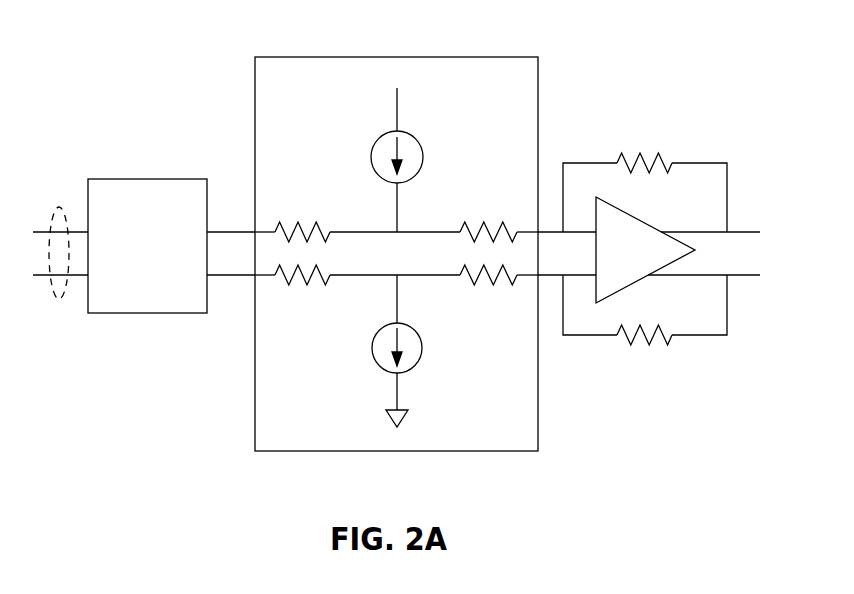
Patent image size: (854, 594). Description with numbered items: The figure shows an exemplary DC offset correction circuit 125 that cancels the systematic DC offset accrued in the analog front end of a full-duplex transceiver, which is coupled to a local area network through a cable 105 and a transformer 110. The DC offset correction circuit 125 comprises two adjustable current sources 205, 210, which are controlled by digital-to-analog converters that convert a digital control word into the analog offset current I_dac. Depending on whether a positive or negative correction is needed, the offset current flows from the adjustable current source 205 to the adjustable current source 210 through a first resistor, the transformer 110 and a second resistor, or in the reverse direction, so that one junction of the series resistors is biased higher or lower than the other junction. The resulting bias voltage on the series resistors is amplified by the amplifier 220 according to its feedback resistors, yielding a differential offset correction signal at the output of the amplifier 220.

The cable 105 is at (60, 207).
The transformer 110 is at (157, 179).
The DC offset correction circuit 125 is at (320, 57).
The adjustable current source 205 is at (371, 156).
The adjustable current source 210 is at (372, 348).
The amplifier 220 is at (695, 250).